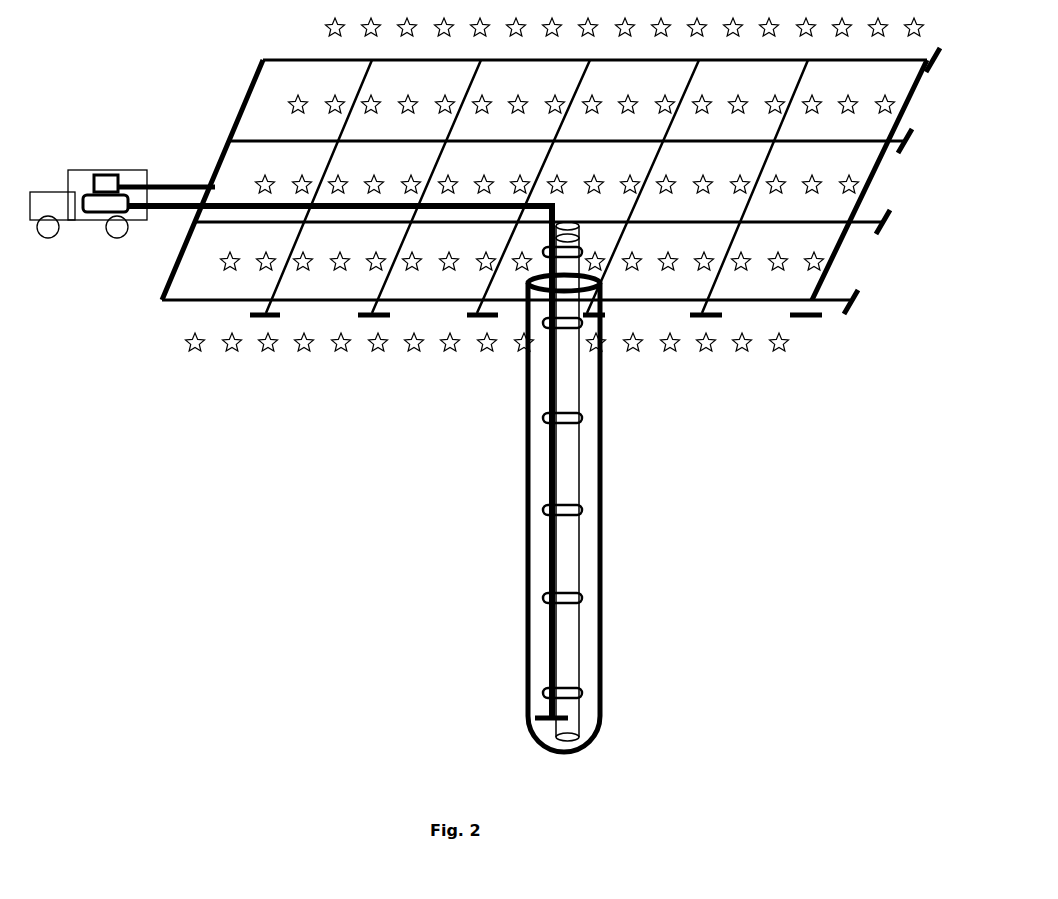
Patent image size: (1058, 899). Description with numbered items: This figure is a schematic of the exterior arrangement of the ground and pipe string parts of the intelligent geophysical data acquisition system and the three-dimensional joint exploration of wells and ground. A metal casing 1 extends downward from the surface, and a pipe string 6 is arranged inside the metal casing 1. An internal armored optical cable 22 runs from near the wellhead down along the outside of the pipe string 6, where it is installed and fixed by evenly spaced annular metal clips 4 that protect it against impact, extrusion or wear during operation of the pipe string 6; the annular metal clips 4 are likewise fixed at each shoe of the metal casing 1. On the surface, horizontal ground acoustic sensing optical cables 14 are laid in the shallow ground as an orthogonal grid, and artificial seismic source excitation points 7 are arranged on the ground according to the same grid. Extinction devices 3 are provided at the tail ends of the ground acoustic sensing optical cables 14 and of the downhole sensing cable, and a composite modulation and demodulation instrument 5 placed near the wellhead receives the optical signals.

The metal casing 1 is at (603, 633).
The extinction devices 3 is at (822, 316).
The annular metal clips 4 is at (543, 600).
The composite modulation and demodulation instrument 5 is at (95, 202).
The pipe string 6 is at (580, 538).
The artificial seismic source excitation points 7 is at (225, 255).
The horizontal ground acoustic sensing optical cables 14 is at (248, 92).
The internal armored optical cable 22 is at (550, 378).